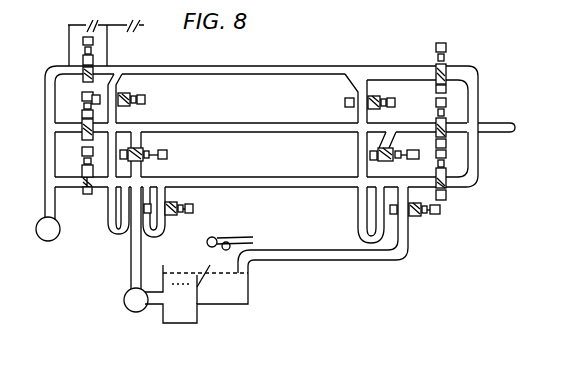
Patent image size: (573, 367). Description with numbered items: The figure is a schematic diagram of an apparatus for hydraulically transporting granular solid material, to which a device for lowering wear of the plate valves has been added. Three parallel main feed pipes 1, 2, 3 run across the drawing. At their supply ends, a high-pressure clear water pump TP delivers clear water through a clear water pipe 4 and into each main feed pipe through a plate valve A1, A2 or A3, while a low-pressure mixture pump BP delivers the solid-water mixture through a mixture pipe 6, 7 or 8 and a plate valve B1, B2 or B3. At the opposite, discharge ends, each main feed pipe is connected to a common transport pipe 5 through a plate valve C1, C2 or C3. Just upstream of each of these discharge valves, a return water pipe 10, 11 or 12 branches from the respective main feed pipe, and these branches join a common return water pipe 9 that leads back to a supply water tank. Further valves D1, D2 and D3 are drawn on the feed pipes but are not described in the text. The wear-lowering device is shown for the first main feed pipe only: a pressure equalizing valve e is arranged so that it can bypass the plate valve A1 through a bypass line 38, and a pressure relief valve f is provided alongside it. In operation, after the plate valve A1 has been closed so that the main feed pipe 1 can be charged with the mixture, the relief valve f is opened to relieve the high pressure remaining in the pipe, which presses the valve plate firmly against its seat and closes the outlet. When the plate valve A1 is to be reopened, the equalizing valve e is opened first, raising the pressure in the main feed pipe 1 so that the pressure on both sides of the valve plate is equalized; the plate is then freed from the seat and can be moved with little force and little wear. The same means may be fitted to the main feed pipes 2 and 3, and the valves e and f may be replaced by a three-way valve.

The main feed pipe 1 is at (262, 66).
The main feed pipe 2 is at (258, 123).
The main feed pipe 3 is at (258, 177).
The clear water pipe 4 is at (43, 160).
The transport pipe 5 is at (502, 124).
The mixture pipe 6 is at (102, 230).
The mixture pipe 7 is at (122, 226).
The mixture pipe 8 is at (152, 234).
The common return water pipe 9 is at (312, 262).
The return water pipe 10 is at (357, 189).
The return water pipe 11 is at (380, 210).
The return water pipe 12 is at (398, 243).
The bypass line 38 is at (68, 26).
The pressure equalizing valve e is at (86, 18).
The pressure relief valve f is at (137, 21).
The plate valve A1 is at (97, 56).
The plate valve A2 is at (82, 108).
The plate valve A3 is at (82, 188).
The plate valve B1 is at (130, 103).
The plate valve B2 is at (167, 157).
The plate valve B3 is at (193, 207).
The plate valve C1 is at (447, 63).
The plate valve C2 is at (437, 120).
The plate valve C3 is at (447, 172).
The slide valve D1 is at (345, 101).
The slide valve D2 is at (370, 151).
The slide valve D3 is at (423, 217).
The high-pressure clear water pump TP is at (44, 242).
The low-pressure mixture pump BP is at (123, 300).